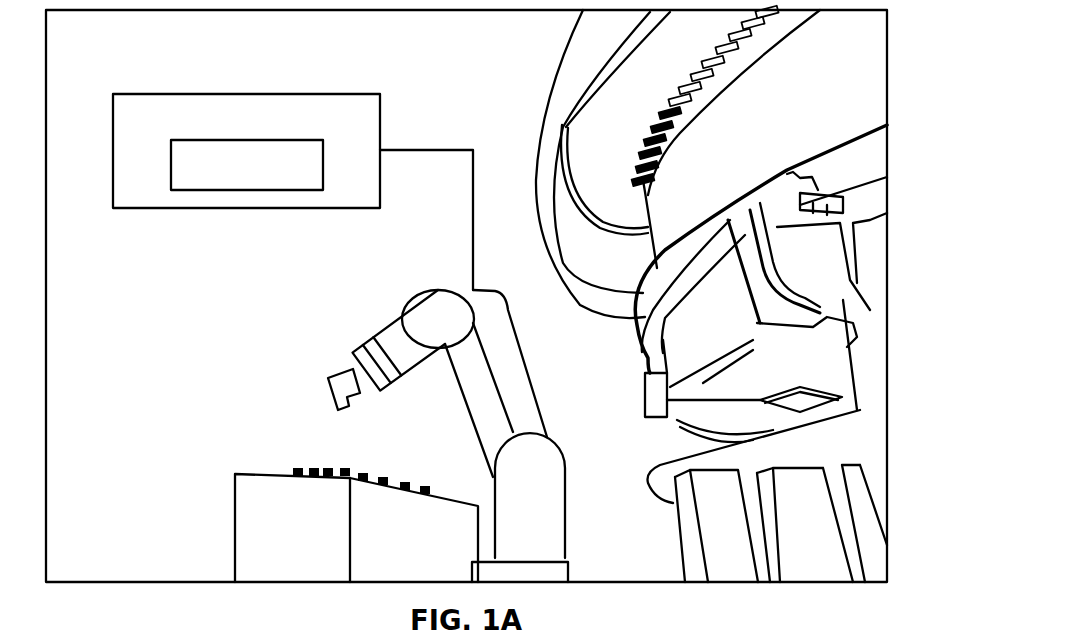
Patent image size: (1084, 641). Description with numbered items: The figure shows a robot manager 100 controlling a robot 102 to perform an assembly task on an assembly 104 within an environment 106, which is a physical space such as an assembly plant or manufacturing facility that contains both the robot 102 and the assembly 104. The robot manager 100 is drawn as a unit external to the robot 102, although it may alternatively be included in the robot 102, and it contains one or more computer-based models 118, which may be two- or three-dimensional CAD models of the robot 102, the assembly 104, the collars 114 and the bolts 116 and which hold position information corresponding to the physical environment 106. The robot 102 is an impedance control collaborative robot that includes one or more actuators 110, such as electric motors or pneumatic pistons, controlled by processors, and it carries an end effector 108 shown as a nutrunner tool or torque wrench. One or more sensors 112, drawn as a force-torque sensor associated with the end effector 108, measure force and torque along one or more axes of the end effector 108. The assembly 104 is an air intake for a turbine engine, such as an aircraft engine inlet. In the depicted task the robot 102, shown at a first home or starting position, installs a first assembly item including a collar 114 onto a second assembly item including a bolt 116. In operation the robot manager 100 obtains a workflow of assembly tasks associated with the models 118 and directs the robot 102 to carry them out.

The robot manager 100 is at (205, 94).
The robot 102 is at (550, 490).
The assembly 104 is at (868, 95).
The environment 106 is at (449, 74).
The end effector 108 is at (338, 410).
The actuators 110 is at (465, 290).
The sensors 112 is at (367, 342).
The collar 114 is at (345, 470).
The bolt 116 is at (727, 53).
The computer-based models 118 is at (227, 190).